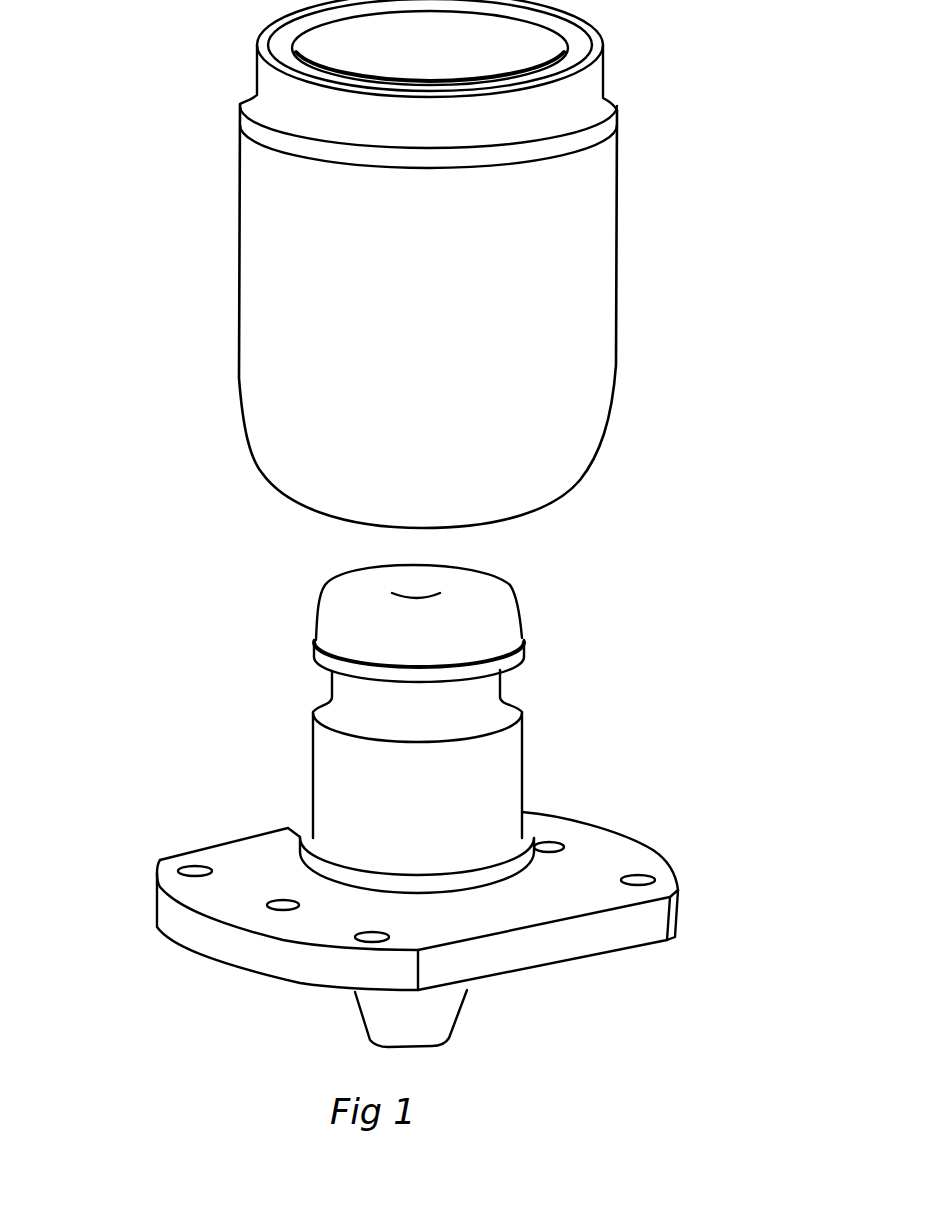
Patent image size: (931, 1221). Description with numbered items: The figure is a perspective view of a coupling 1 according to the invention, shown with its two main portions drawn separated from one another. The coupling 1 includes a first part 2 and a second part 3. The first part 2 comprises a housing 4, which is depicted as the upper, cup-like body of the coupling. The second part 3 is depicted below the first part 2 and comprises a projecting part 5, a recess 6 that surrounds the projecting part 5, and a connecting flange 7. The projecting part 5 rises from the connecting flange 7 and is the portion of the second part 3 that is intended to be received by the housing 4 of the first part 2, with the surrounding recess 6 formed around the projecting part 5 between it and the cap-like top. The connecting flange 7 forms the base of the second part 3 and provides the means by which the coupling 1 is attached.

The coupling 1 is at (185, 462).
The first part 2 is at (667, 297).
The second part 3 is at (605, 752).
The housing 4 is at (260, 254).
The projecting part 5 is at (303, 756).
The recess 6 is at (508, 690).
The connecting flange 7 is at (638, 853).